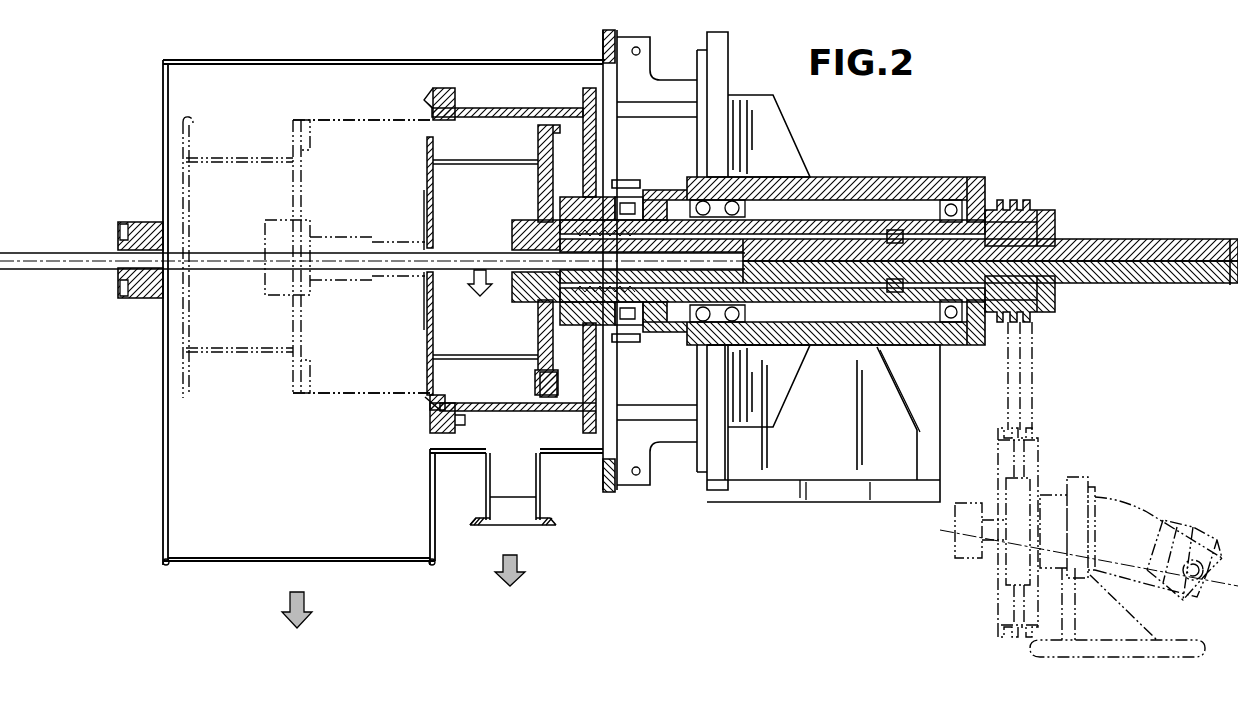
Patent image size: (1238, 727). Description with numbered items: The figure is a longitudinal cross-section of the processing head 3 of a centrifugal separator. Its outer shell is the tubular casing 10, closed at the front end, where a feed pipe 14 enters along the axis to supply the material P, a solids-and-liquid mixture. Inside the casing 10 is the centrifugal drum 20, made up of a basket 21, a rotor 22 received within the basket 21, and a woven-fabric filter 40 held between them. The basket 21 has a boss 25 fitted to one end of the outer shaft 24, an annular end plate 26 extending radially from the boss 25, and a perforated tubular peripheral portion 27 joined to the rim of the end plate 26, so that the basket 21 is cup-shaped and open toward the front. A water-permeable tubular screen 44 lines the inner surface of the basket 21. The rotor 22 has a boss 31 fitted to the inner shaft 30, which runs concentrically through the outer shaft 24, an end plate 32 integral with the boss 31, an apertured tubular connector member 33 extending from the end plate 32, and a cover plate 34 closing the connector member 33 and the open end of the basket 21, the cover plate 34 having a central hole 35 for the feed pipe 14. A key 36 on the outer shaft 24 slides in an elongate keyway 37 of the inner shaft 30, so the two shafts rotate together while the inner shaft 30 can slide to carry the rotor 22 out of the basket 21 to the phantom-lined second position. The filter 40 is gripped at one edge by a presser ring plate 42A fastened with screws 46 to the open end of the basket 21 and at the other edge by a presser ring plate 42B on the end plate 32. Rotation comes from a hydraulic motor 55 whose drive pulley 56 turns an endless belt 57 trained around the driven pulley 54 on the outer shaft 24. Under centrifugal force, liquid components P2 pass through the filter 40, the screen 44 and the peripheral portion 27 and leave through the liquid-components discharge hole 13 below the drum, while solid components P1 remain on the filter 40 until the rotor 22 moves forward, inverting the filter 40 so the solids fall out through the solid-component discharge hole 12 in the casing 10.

The processing head 3 is at (335, 50).
The casing 10 is at (240, 62).
The solid-component discharge hole 12 is at (386, 570).
The liquid-components discharge hole 13 is at (520, 528).
The feed pipe 14 is at (214, 270).
The centrifugal drum 20 is at (364, 112).
The basket 21 is at (548, 108).
The rotor 22 is at (220, 354).
The outer shaft 24 is at (838, 224).
The boss 25 is at (617, 190).
The end plate 26 is at (606, 128).
The tubular peripheral portion 27 is at (484, 108).
The inner shaft 30 is at (923, 294).
The boss 31 is at (516, 302).
The end plate 32 is at (551, 322).
The tubular connector member 33 is at (456, 356).
The cover plate 34 is at (426, 202).
The central hole 35 is at (424, 254).
The key 36 is at (892, 242).
The keyway 37 is at (1103, 238).
The filter 40 is at (400, 120).
The presser ring plate 42A is at (430, 406).
The presser ring plate 42B is at (541, 382).
The tubular screen 44 is at (446, 120).
The screws 46 is at (454, 420).
The driven pulley 54 is at (1026, 322).
The hydraulic motor 55 is at (1122, 500).
The drive pulley 56 is at (994, 435).
The endless belt 57 is at (1024, 396).
The material P is at (480, 299).
The solid components P1 is at (305, 600).
The liquid components P2 is at (520, 568).